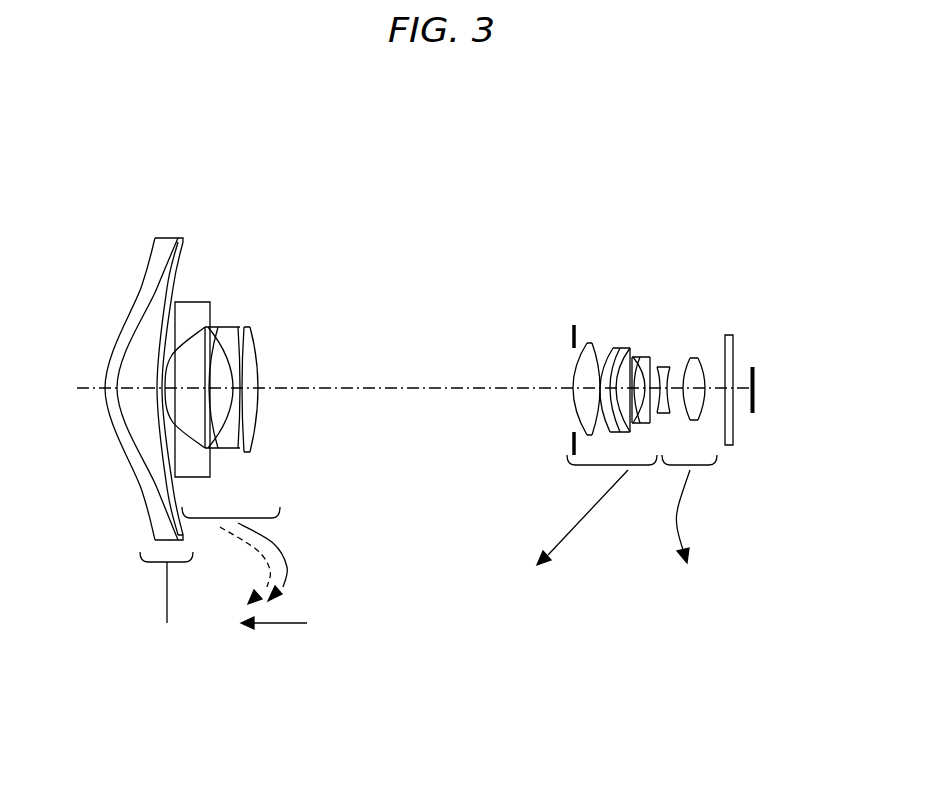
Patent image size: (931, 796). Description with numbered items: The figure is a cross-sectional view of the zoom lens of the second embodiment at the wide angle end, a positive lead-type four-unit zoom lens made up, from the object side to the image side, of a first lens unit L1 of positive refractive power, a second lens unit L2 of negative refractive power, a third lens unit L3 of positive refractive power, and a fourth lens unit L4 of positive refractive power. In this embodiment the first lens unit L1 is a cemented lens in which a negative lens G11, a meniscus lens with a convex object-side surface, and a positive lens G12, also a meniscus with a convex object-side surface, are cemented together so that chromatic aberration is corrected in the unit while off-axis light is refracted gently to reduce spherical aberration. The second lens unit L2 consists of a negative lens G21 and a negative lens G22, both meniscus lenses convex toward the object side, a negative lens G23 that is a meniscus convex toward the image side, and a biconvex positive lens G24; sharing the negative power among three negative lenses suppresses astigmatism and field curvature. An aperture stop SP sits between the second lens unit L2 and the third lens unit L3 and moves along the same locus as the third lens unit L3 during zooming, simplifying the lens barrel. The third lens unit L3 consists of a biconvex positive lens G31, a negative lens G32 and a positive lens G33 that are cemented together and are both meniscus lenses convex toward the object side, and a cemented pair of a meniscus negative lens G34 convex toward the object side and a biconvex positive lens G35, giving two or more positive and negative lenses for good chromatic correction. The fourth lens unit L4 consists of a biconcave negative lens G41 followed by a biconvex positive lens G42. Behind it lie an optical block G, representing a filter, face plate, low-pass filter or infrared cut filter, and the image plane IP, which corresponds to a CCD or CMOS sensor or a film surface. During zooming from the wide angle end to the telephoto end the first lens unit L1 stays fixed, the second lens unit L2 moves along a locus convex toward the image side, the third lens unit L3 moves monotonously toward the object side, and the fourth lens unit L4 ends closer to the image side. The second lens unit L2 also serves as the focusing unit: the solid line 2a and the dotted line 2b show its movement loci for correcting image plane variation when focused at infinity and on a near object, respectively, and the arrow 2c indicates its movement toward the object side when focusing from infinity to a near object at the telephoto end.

The first lens unit L1 is at (208, 184).
The second lens unit L2 is at (357, 184).
The third lens unit L3 is at (667, 263).
The fourth lens unit L4 is at (733, 223).
The negative lens G11 is at (165, 245).
The positive lens G12 is at (180, 242).
The negative lens G21 is at (190, 307).
The negative lens G22 is at (228, 327).
The negative lens G23 is at (237, 327).
The positive lens G24 is at (252, 325).
The positive lens G31 is at (583, 352).
The negative lens G32 is at (613, 348).
The positive lens G33 is at (622, 347).
The negative lens G34 is at (636, 357).
The positive lens G35 is at (646, 357).
The negative lens G41 is at (663, 367).
The positive lens G42 is at (693, 358).
The aperture stop SP is at (572, 443).
The optical block G is at (747, 310).
The image plane IP is at (755, 375).
The solid line 2a is at (283, 553).
The dotted line 2b is at (258, 558).
The arrow 2c is at (283, 626).